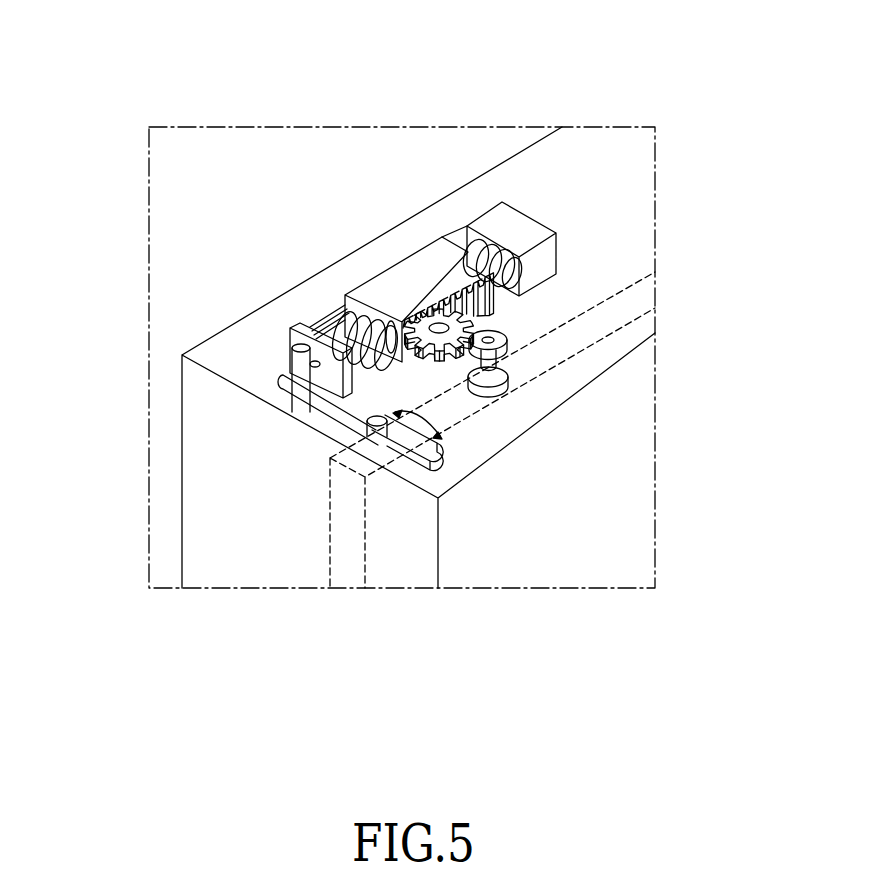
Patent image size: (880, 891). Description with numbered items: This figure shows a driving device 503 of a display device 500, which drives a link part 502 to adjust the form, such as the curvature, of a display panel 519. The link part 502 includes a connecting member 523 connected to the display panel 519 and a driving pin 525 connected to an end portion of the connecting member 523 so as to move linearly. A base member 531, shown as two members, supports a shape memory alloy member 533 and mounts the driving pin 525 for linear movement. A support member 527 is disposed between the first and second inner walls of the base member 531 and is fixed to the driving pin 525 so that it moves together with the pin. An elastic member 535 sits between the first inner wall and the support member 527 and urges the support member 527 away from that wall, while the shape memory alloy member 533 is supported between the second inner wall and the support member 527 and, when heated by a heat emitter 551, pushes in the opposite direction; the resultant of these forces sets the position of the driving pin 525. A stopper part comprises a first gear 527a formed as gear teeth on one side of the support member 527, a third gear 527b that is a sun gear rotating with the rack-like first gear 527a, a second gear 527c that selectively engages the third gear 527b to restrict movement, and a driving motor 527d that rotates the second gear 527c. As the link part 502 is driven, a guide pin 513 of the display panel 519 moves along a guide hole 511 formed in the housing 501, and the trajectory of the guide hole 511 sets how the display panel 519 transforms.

The display device 500 is at (548, 101).
The housing 501 is at (203, 492).
The link part 502 is at (64, 300).
The driving device 503 is at (364, 264).
The guide hole 511 is at (445, 360).
The guide pin 513 is at (407, 458).
The display panel 519 is at (575, 540).
The connecting member 523 is at (290, 388).
The driving pin 525 is at (503, 242).
The support member 527 is at (427, 263).
The first gear 527a is at (507, 342).
The third gear 527b is at (446, 446).
The second gear 527c is at (497, 302).
The driving motor 527d is at (507, 392).
The base member 531 is at (528, 230).
The shape memory alloy member 533 is at (345, 305).
The elastic member 535 is at (516, 256).
The heat emitter 551 is at (327, 313).